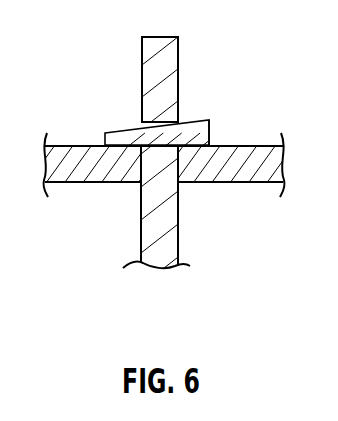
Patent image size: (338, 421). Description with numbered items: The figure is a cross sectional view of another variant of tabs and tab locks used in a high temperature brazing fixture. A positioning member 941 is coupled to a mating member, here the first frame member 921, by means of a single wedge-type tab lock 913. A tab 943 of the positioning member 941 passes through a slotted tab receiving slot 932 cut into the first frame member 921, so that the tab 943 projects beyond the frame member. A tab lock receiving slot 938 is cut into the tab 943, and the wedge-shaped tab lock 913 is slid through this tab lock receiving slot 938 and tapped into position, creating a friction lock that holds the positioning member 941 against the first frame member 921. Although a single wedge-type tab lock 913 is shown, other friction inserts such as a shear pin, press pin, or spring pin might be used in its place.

The tab 943 is at (150, 56).
The tab lock receiving slot 938 is at (146, 127).
The tab lock 913 is at (202, 133).
The tab receiving slot 932 is at (140, 186).
The first frame member 921 is at (221, 173).
The positioning member 941 is at (145, 235).